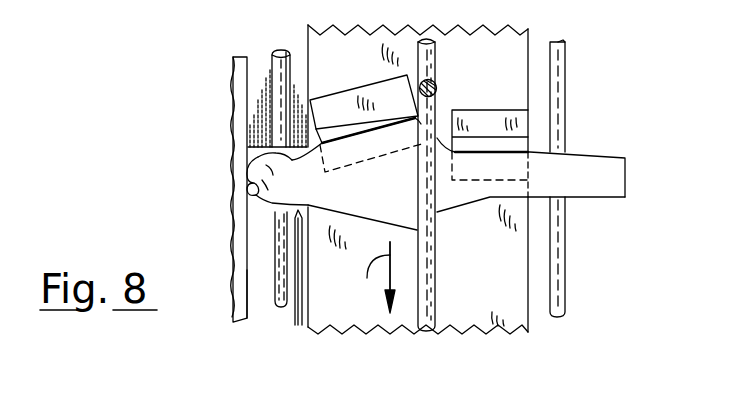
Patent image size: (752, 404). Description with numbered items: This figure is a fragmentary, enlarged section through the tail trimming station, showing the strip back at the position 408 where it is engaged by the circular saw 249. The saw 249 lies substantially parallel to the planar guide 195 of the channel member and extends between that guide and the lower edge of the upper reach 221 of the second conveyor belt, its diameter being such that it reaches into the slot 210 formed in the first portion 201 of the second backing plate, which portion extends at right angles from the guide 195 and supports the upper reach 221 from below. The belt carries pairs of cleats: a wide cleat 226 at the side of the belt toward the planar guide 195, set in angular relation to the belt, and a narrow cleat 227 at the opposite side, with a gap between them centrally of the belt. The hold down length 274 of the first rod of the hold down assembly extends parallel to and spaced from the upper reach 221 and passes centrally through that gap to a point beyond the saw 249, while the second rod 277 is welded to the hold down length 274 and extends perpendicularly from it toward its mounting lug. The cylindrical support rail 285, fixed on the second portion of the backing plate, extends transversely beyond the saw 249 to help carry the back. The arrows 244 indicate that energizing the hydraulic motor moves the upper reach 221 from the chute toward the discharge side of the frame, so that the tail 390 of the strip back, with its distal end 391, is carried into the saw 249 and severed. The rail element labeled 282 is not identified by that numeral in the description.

The planar guide 195 is at (247, 69).
The first portion of second backing plate 201 is at (254, 115).
The slot 210 is at (257, 283).
The upper reach 221 is at (492, 300).
The wide cleat 226 is at (347, 103).
The narrow cleat 227 is at (485, 118).
The arrows 244 is at (366, 277).
The circular saw 249 is at (298, 277).
The hold down length 274 is at (434, 258).
The second rod 277 is at (437, 86).
The tube 282 is at (282, 238).
The cylindrical support rail 285 is at (565, 110).
The tail 390 is at (262, 161).
The distal end 391 is at (250, 200).
The position of strip back 408 is at (410, 200).